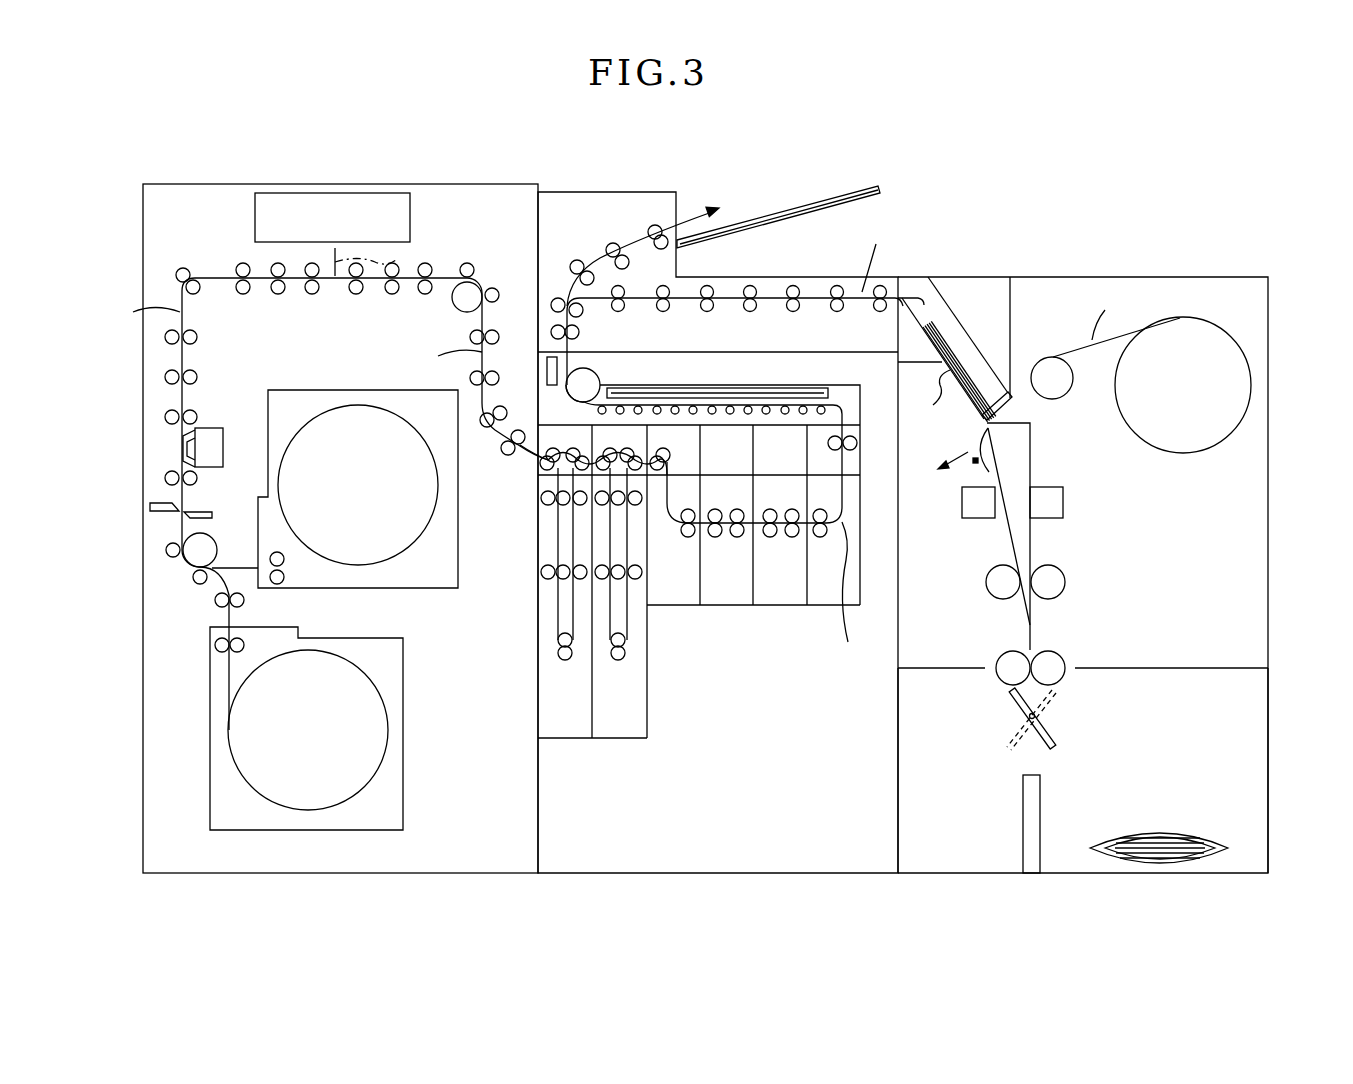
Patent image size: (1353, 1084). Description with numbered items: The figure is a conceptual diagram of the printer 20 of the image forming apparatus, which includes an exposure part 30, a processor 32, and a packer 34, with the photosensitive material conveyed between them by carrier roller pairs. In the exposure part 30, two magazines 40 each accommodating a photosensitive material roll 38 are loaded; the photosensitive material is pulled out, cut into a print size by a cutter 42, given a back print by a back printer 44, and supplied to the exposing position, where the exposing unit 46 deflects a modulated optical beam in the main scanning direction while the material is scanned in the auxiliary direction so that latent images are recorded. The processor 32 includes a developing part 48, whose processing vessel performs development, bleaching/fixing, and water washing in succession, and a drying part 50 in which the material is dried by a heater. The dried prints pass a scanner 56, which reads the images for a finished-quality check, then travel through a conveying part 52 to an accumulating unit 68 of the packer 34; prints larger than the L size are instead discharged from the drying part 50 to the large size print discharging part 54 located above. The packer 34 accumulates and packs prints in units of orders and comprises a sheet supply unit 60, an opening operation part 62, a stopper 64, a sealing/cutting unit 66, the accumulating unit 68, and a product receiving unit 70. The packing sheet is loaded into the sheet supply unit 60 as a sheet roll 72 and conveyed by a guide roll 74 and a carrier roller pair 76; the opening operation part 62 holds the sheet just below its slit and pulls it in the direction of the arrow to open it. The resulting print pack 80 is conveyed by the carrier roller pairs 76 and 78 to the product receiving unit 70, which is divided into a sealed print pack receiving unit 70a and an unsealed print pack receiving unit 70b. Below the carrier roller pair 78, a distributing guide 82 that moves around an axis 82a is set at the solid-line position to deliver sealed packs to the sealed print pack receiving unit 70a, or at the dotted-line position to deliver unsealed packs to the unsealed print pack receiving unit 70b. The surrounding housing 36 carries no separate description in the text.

The printer 20 is at (1007, 152).
The exposure part 30 is at (325, 873).
The processor 32 is at (715, 873).
The packer 34 is at (1068, 277).
The housing 36 is at (1250, 579).
The photosensitive material roll 38 is at (438, 495).
The magazine 40 is at (458, 558).
The cutter 42 is at (148, 505).
The back printer 44 is at (206, 428).
The exposing unit 46 is at (255, 216).
The developing part 48 is at (752, 732).
The drying part 50 is at (690, 383).
The conveying part 52 is at (768, 287).
The large size print discharging part 54 is at (738, 207).
The scanner 56 is at (555, 386).
The sheet supply unit 60 is at (1150, 290).
The opening operation part 62 is at (978, 462).
The stopper 64 is at (1000, 392).
The sealing/cutting unit 66 is at (1064, 500).
The accumulating unit 68 is at (955, 340).
The product receiving unit 70 is at (1065, 875).
The sealed print pack receiving unit 70a is at (1248, 742).
The unsealed print pack receiving unit 70b is at (936, 824).
The sheet roll 72 is at (1232, 450).
The guide roll 74 is at (1070, 392).
The carrier roller pair 76 is at (1066, 582).
The carrier roller pair 78 is at (1066, 655).
The print pack 80 is at (1150, 840).
The distributing guide 82 is at (1058, 745).
The axis 82a is at (1038, 716).